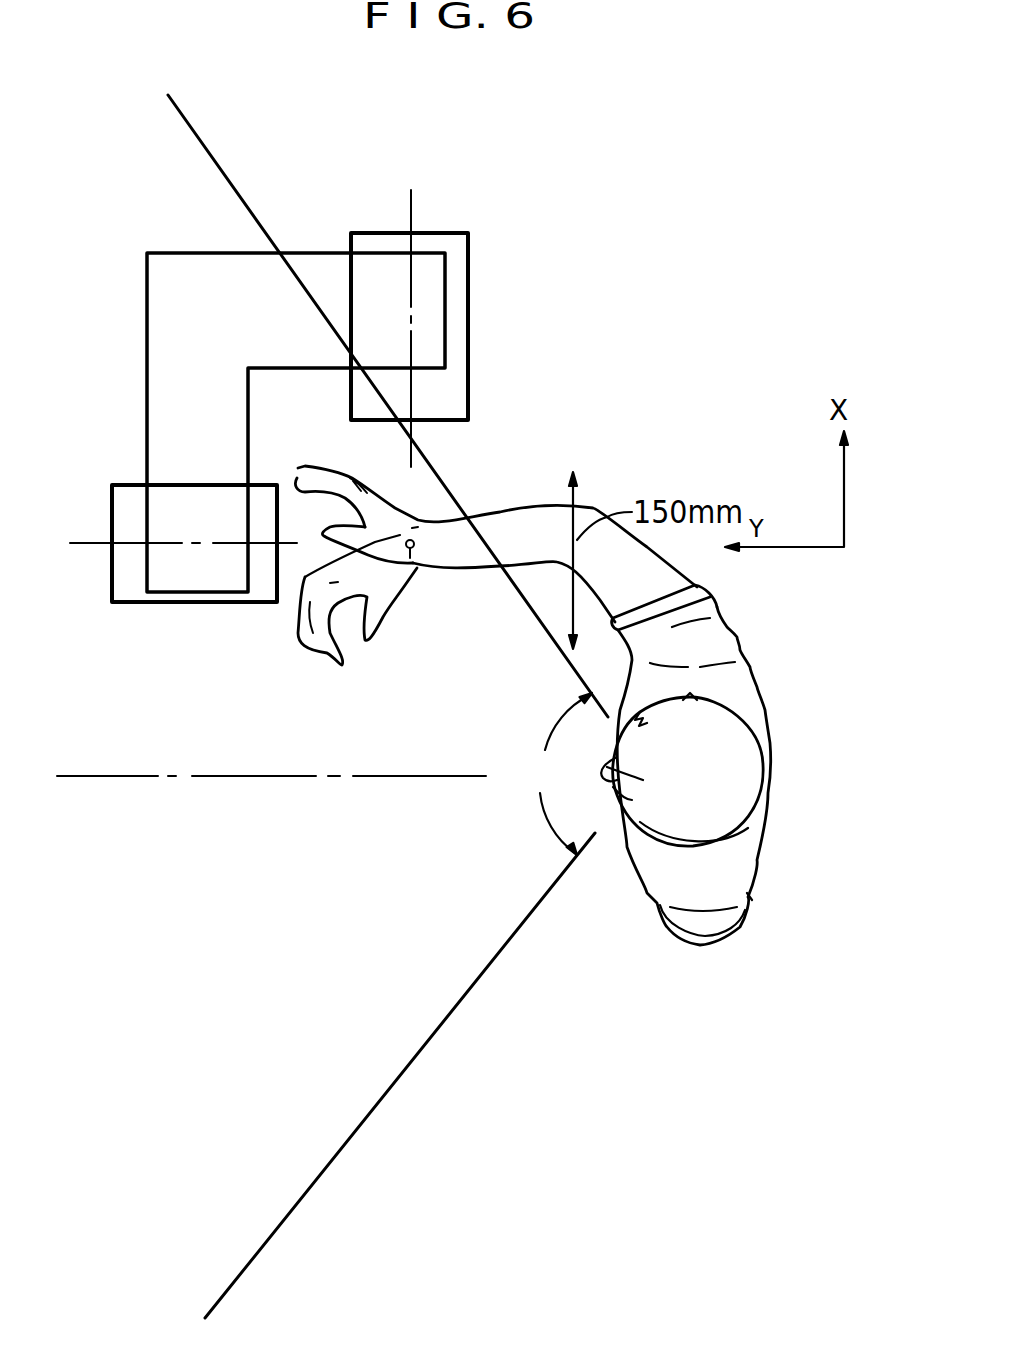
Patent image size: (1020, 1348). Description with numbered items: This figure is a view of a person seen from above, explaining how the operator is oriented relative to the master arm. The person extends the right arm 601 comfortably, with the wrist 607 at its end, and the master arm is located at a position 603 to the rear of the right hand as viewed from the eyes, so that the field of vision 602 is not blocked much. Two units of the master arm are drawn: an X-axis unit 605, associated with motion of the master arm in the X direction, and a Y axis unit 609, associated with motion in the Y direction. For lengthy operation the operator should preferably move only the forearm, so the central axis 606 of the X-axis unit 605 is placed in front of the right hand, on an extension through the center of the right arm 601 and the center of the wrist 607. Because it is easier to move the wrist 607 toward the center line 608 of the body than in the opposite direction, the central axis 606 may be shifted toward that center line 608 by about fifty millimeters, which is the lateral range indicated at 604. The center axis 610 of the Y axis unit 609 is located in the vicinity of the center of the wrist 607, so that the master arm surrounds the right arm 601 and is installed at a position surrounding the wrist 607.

The right arm 601 is at (503, 512).
The field of vision 602 is at (552, 774).
The position of the master arm 603 is at (187, 258).
The movement range of arm 604 is at (581, 502).
The X-axis unit 605 is at (118, 604).
The central axis of the X-axis unit 606 is at (83, 543).
The wrist 607 is at (411, 556).
The center line of the body 608 is at (210, 778).
The Y axis unit 609 is at (468, 281).
The center axis of the Y axis unit 610 is at (411, 191).